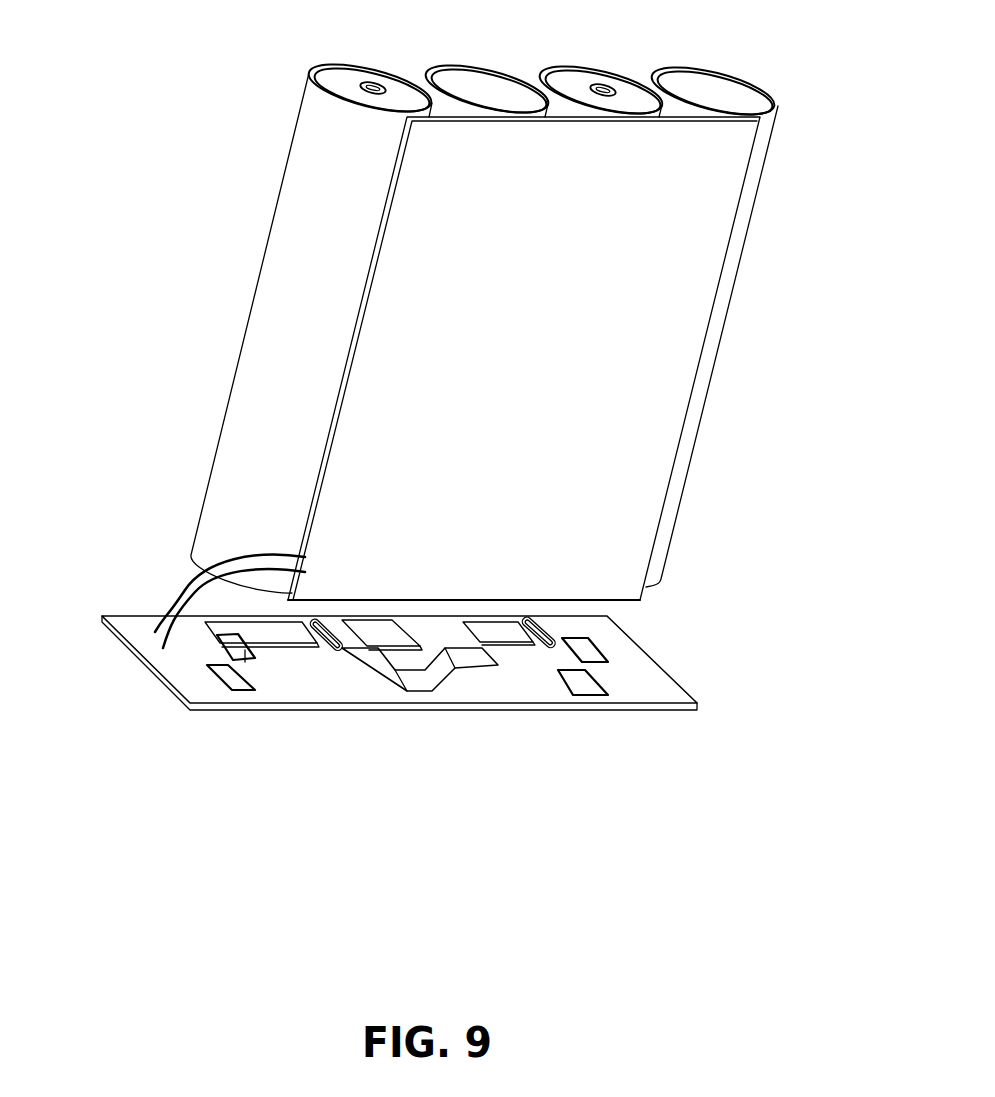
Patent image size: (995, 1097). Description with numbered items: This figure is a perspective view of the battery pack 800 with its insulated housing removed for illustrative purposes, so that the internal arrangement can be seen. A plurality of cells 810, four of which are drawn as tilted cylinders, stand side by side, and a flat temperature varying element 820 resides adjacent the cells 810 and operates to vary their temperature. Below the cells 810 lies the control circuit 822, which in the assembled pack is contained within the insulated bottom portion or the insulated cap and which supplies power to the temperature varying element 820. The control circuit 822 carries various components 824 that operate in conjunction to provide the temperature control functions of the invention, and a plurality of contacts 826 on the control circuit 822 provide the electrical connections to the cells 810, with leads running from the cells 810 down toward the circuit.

The battery pack 800 is at (193, 847).
The cells 810 is at (688, 72).
The temperature varying element 820 is at (700, 240).
The control circuit 822 is at (607, 638).
The components 824 is at (267, 630).
The contacts 826 is at (242, 650).